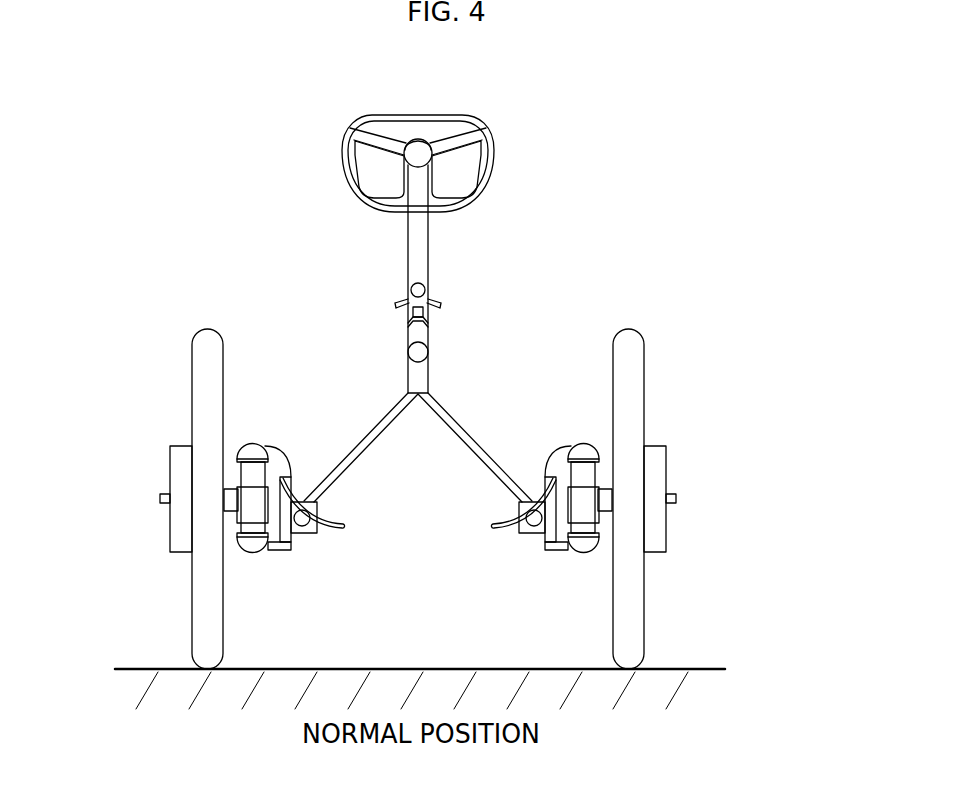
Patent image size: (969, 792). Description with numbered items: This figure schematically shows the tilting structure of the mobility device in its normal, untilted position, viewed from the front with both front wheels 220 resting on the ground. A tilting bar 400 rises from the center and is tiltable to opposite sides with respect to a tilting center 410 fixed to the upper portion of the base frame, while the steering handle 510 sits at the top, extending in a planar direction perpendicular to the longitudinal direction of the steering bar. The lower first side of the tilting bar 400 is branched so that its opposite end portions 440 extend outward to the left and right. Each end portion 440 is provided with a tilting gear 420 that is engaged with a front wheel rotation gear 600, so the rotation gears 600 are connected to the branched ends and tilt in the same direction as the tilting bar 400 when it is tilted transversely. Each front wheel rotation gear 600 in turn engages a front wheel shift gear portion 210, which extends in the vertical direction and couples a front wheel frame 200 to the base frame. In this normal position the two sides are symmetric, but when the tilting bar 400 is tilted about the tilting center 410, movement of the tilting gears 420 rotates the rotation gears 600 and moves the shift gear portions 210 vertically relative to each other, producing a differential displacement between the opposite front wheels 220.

The steering handle 510 is at (483, 177).
The tilting bar 400 is at (412, 246).
The tilting center 410 is at (408, 350).
The opposite end portions 440 is at (463, 447).
The front wheel frame 200 is at (583, 443).
The front wheel shift gear portion 210 is at (556, 460).
The front wheel 220 is at (637, 391).
The tilting gear 420 is at (500, 530).
The front wheel rotation gear 600 is at (302, 527).